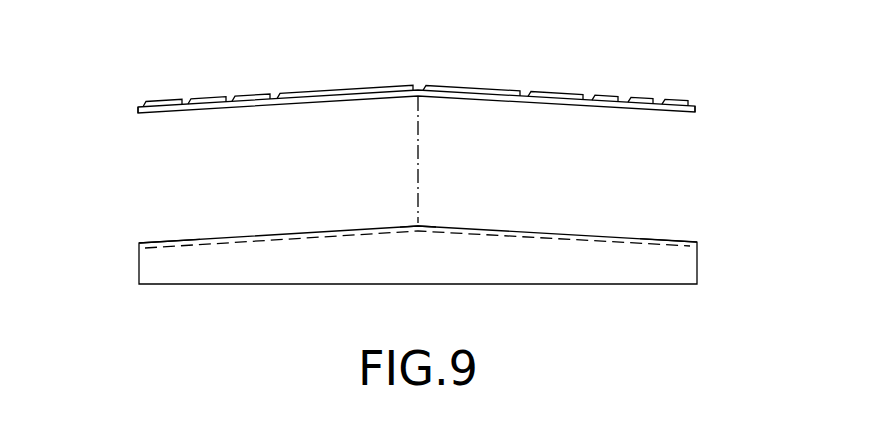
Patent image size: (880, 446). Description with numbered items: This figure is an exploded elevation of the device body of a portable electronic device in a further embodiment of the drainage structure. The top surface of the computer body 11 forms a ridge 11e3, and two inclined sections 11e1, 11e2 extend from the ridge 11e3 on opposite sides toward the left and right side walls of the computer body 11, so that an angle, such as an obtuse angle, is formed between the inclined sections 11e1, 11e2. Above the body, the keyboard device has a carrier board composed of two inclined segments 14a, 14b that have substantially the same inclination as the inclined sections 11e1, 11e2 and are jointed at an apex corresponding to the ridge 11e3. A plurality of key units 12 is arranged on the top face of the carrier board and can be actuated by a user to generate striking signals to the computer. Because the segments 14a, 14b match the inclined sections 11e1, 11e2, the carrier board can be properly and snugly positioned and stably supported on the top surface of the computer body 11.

The computer body 11 is at (683, 273).
The inclined section 11e1 is at (183, 247).
The inclined section 11e2 is at (660, 247).
The ridge 11e3 is at (418, 224).
The key units 12 is at (637, 97).
The inclined segment 14a is at (140, 110).
The inclined segment 14b is at (697, 108).